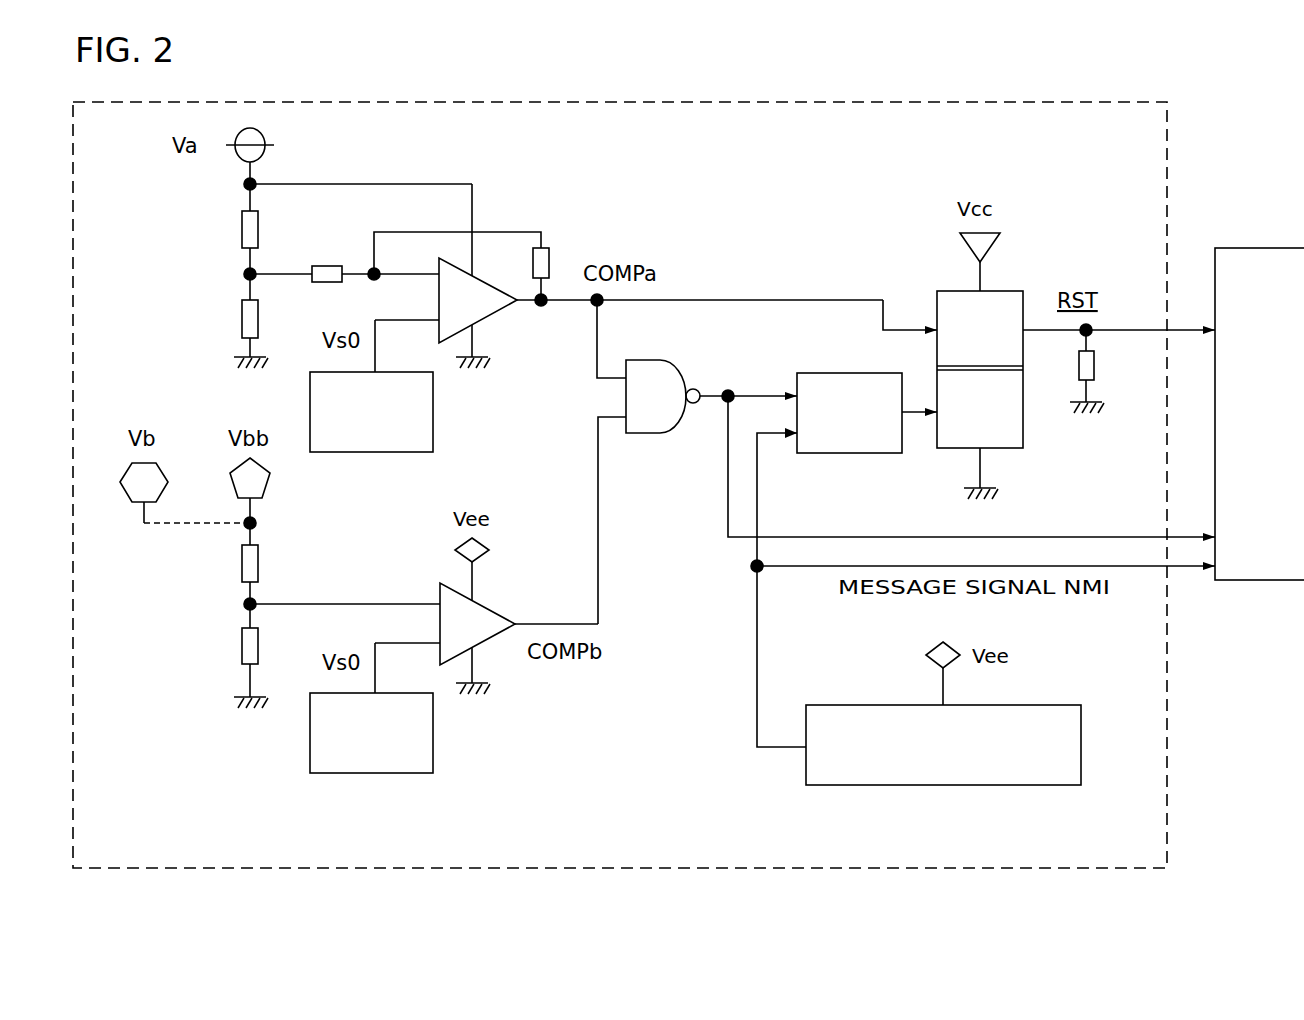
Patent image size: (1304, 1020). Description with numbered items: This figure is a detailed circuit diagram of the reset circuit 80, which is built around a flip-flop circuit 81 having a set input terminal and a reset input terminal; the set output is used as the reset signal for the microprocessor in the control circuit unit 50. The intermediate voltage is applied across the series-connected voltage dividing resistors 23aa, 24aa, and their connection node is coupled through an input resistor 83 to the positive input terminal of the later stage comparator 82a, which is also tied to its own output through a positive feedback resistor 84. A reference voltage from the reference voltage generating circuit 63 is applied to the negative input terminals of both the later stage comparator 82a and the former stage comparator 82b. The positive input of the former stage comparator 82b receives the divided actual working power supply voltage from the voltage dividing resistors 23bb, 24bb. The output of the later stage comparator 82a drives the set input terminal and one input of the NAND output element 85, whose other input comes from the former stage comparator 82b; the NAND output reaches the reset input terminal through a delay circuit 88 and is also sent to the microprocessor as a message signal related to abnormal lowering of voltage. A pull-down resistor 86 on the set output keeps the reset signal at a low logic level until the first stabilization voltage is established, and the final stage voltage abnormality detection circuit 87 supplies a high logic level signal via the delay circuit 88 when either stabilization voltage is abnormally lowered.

The reset circuit 80 is at (1167, 790).
The voltage dividing resistor 23aa is at (240, 236).
The voltage dividing resistor 24aa is at (240, 322).
The input resistor 83 is at (325, 263).
The positive feedback resistor 84 is at (548, 248).
The later stage comparator 82a is at (490, 316).
The reference voltage generating circuit 63 is at (433, 420).
The NAND output element 85 is at (650, 433).
The delay circuit 88 is at (845, 453).
The flip-flop circuit 81 is at (1023, 425).
The pull-down resistor 86 is at (1094, 366).
The control circuit unit 50 is at (1276, 248).
The voltage dividing resistor 23bb is at (241, 565).
The voltage dividing resistor 24bb is at (241, 652).
The former stage comparator 82b is at (483, 607).
The final stage voltage abnormality detection circuit 87 is at (935, 785).